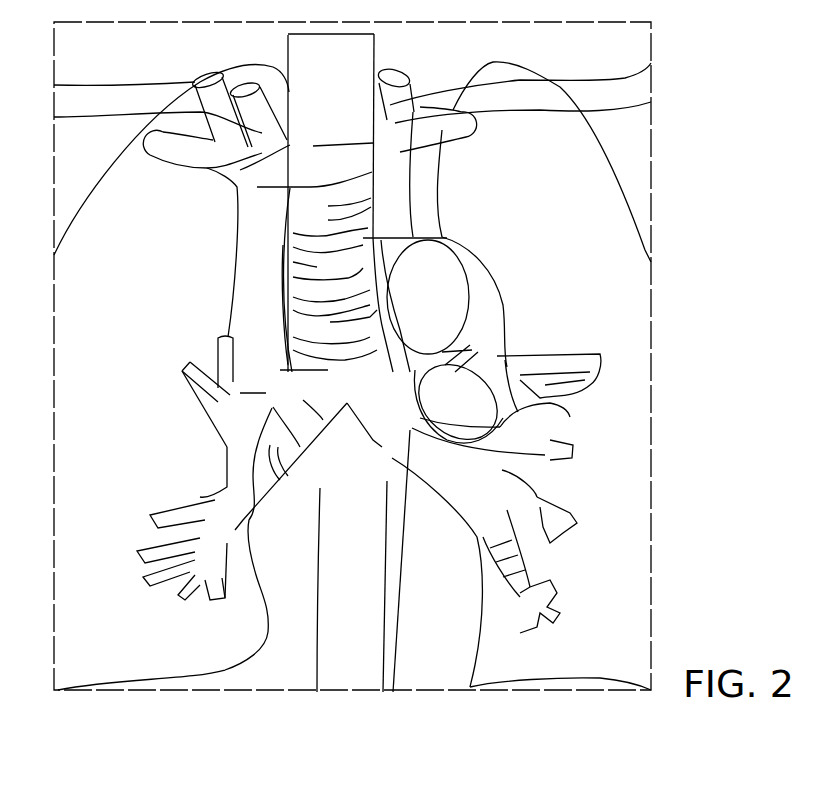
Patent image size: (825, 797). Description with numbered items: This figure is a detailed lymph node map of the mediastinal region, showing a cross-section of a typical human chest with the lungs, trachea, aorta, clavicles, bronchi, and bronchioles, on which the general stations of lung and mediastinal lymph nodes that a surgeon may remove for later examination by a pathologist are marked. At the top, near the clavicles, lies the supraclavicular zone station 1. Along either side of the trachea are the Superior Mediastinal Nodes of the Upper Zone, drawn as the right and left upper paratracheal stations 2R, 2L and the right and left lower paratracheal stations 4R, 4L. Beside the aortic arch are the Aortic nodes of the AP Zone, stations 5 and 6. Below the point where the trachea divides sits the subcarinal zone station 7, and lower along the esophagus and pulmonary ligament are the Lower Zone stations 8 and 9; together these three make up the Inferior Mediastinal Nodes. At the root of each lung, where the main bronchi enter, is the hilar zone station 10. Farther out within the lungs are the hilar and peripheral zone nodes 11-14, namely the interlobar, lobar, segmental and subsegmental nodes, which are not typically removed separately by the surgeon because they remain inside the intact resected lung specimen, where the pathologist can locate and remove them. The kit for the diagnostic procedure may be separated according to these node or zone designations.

The supraclavicular zone lymph node station 1 is at (340, 74).
The right upper paratracheal node station 2R is at (323, 150).
The left upper paratracheal node station 2L is at (404, 186).
The right lower paratracheal node station 4R is at (322, 267).
The left lower paratracheal node station 4L is at (421, 309).
The aortic node station 5 is at (495, 373).
The aortic node station 6 is at (474, 302).
The subcarinal zone node station 7 is at (313, 466).
The lower zone node station 8 is at (353, 586).
The lower zone node station 9 is at (344, 561).
The hilar zone node station 10 is at (343, 412).
The hilar/peripheral zone lymph nodes 11-14 is at (359, 434).